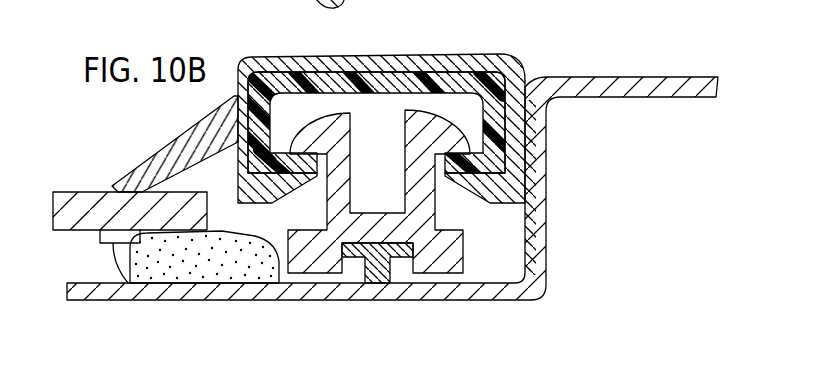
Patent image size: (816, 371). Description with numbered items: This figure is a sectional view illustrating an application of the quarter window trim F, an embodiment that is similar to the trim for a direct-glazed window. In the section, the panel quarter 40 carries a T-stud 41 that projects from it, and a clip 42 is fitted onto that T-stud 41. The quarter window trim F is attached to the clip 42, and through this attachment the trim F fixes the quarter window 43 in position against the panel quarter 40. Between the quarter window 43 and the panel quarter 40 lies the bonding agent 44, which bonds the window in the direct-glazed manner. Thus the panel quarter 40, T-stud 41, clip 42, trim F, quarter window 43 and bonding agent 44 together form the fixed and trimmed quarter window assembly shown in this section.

The panel quarter 40 is at (644, 77).
The T-stud 41 is at (380, 268).
The clip 42 is at (343, 164).
The quarter window 43 is at (90, 197).
The bonding agent 44 is at (253, 280).
The quarter window trim F is at (261, 56).